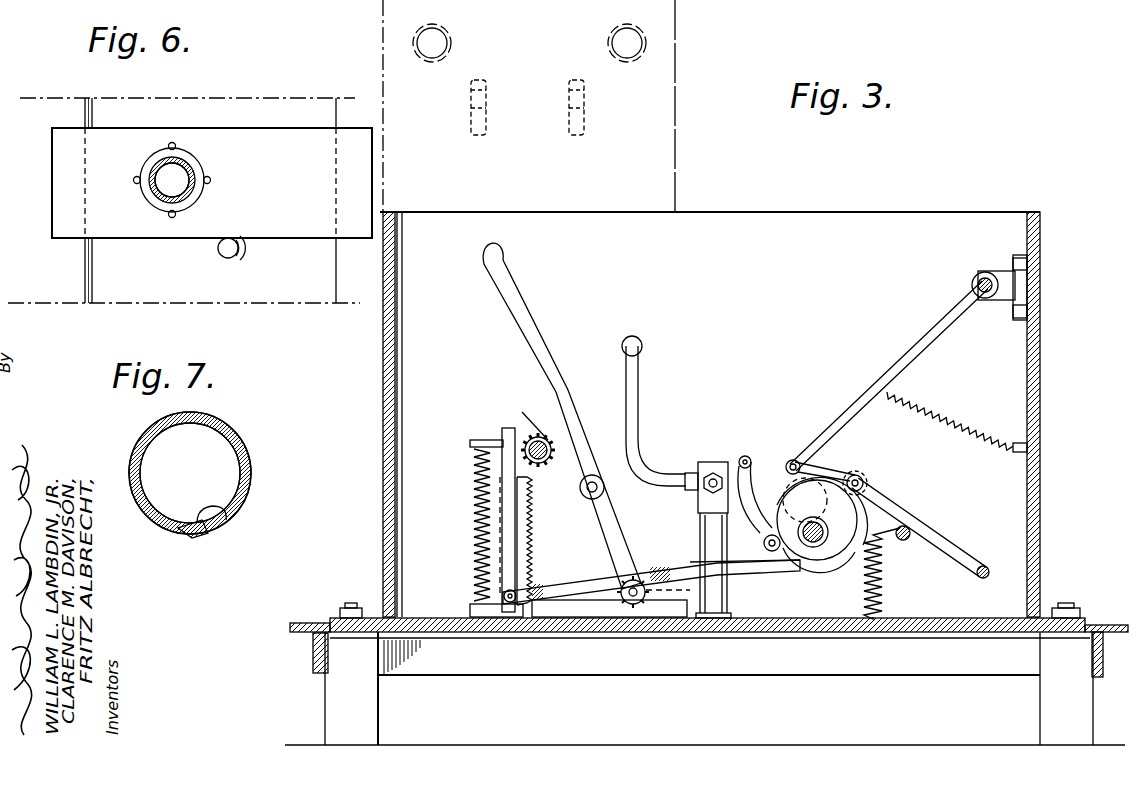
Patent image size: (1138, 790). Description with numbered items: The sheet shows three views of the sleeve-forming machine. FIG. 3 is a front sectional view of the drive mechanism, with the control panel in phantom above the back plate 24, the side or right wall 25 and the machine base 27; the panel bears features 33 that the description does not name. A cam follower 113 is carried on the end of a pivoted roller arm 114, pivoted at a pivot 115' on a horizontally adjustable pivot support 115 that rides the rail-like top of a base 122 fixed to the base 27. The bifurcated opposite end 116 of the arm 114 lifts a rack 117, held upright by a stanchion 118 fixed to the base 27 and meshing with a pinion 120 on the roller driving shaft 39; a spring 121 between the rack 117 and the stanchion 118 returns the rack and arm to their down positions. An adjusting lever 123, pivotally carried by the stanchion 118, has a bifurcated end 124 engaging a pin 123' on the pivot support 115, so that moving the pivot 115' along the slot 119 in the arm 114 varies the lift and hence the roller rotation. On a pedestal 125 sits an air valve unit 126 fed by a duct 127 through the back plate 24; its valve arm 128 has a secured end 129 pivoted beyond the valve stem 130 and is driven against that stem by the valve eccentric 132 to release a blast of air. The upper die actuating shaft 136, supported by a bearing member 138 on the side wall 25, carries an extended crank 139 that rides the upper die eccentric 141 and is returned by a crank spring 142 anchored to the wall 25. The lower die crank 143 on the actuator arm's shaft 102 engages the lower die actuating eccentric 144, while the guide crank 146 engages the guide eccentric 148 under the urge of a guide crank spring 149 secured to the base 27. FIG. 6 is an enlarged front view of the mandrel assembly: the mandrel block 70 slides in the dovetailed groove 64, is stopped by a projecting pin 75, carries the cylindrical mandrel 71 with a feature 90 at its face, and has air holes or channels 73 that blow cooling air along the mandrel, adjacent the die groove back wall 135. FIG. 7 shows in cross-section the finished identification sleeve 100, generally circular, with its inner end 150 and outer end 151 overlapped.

In FIG. 6, the die groove back wall 135 is at (152, 108).
In FIG. 6, the bore 90 is at (181, 170).
In FIG. 6, the mandrel 71 is at (203, 164).
In FIG. 6, the air holes or channels 73 is at (177, 214).
In FIG. 6, the dovetailed groove 64 is at (93, 272).
In FIG. 6, the projecting pin 75 is at (230, 258).
In FIG. 6, the mandrel block 70 is at (308, 232).
In FIG. 7, the identification sleeve 100 is at (242, 440).
In FIG. 7, the inner end 150 is at (212, 508).
In FIG. 7, the outer end 151 is at (195, 534).
In FIG. 3, the openings 33 is at (663, 43).
In FIG. 3, the back plate 24 is at (808, 223).
In FIG. 3, the bearing member 138 is at (1003, 270).
In FIG. 3, the upper die actuating shaft 136 is at (974, 281).
In FIG. 3, the extended crank 139 is at (950, 320).
In FIG. 3, the side wall 25 is at (1026, 350).
In FIG. 3, the crank spring 142 is at (952, 414).
In FIG. 3, the adjusting lever 123 is at (562, 416).
In FIG. 3, the duct 127 is at (641, 372).
In FIG. 3, the pinion 120 is at (538, 436).
In FIG. 3, the rack 117 is at (505, 434).
In FIG. 3, the spring 121 is at (473, 496).
In FIG. 3, the roller driving shaft 39 is at (542, 463).
In FIG. 3, the secured end 129 is at (741, 460).
In FIG. 3, the valve arm 128 is at (758, 468).
In FIG. 3, the upper die eccentric 141 is at (800, 449).
In FIG. 3, the lower die actuating eccentric 144 is at (834, 470).
In FIG. 3, the guide eccentric 148 is at (852, 477).
In FIG. 3, the guide crank 146 is at (870, 490).
In FIG. 3, the lower die crank 143 is at (905, 528).
In FIG. 3, the air valve unit 126 is at (703, 463).
In FIG. 3, the valve stem 130 is at (698, 497).
In FIG. 3, the pedestal 125 is at (700, 516).
In FIG. 3, the pivot 115' is at (664, 528).
In FIG. 3, the pin 123' is at (653, 571).
In FIG. 3, the slot 119 is at (574, 587).
In FIG. 3, the stanchion 118 is at (470, 610).
In FIG. 3, the cam follower 113 is at (757, 570).
In FIG. 3, the valve eccentric 132 is at (835, 572).
In FIG. 3, the guide crank spring 149 is at (886, 572).
In FIG. 3, the actuator arm's shaft 102 is at (1000, 572).
In FIG. 3, the machine base 27 is at (1092, 626).
In FIG. 3, the bifurcated opposite end 116 is at (487, 628).
In FIG. 3, the base 122 is at (588, 612).
In FIG. 3, the bifurcated end 124 is at (620, 626).
In FIG. 3, the pivot support 115 is at (680, 646).
In FIG. 3, the pivoted roller arm 114 is at (749, 622).